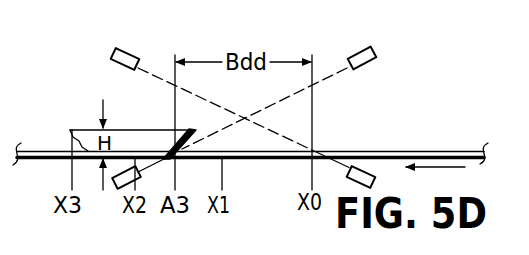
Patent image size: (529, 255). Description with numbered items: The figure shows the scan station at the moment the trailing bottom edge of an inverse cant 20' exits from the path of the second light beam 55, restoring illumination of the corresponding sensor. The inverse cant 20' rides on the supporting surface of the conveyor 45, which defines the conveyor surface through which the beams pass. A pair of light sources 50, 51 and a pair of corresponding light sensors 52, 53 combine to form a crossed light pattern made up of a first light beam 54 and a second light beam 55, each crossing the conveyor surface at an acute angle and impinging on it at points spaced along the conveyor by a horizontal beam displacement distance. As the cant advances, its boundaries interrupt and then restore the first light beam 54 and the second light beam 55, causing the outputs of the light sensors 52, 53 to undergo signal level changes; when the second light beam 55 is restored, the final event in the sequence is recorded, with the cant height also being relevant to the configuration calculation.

The conveyor 45 is at (383, 151).
The inverse cant 20' is at (133, 129).
The light source 50 is at (375, 180).
The light source 51 is at (116, 186).
The light sensor 52 is at (121, 48).
The light sensor 53 is at (368, 48).
The first light beam 54 is at (148, 70).
The second light beam 55 is at (327, 77).